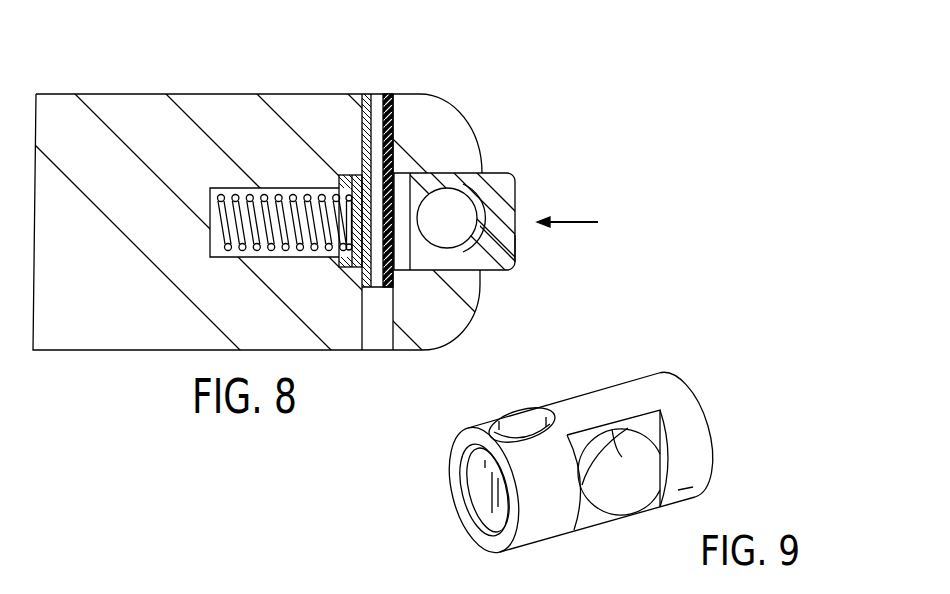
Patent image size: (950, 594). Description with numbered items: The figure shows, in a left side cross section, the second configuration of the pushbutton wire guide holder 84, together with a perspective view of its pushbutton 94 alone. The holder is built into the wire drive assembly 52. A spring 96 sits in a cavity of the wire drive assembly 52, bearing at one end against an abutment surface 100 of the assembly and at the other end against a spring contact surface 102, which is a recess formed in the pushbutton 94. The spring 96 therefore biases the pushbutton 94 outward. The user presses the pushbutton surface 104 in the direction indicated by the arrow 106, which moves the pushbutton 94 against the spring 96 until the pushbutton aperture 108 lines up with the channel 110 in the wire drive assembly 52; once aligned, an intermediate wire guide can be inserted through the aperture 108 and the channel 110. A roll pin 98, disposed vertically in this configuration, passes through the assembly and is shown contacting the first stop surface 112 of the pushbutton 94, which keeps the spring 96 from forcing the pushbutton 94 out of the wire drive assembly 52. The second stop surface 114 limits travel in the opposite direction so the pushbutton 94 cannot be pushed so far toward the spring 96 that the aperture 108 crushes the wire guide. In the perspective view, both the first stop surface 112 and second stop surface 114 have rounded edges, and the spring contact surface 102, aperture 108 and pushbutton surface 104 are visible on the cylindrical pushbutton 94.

In FIG. 8, the wire drive assembly 52 is at (425, 104).
In FIG. 8, the pushbutton wire guide holder 84 is at (587, 51).
In FIG. 8, the pushbutton 94 is at (499, 217).
In FIG. 9, the pushbutton 94 is at (585, 420).
In FIG. 8, the spring 96 is at (284, 188).
In FIG. 8, the roll pin 98 is at (378, 94).
In FIG. 8, the abutment surface 100 is at (208, 224).
In FIG. 8, the spring contact surface 102 is at (351, 250).
In FIG. 9, the spring contact surface 102 is at (482, 492).
In FIG. 8, the pushbutton surface 104 is at (518, 243).
In FIG. 9, the pushbutton surface 104 is at (703, 410).
In FIG. 8, the arrow 106 is at (579, 221).
In FIG. 8, the pushbutton aperture 108 is at (472, 257).
In FIG. 9, the pushbutton aperture 108 is at (620, 498).
In FIG. 8, the channel 110 is at (441, 252).
In FIG. 8, the first stop surface 112 is at (371, 168).
In FIG. 9, the first stop surface 112 is at (500, 422).
In FIG. 8, the second stop surface 114 is at (410, 188).
In FIG. 9, the second stop surface 114 is at (530, 417).